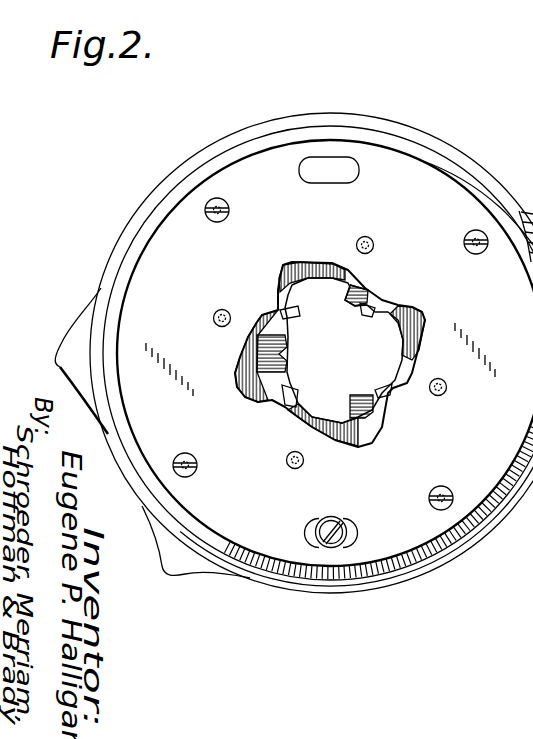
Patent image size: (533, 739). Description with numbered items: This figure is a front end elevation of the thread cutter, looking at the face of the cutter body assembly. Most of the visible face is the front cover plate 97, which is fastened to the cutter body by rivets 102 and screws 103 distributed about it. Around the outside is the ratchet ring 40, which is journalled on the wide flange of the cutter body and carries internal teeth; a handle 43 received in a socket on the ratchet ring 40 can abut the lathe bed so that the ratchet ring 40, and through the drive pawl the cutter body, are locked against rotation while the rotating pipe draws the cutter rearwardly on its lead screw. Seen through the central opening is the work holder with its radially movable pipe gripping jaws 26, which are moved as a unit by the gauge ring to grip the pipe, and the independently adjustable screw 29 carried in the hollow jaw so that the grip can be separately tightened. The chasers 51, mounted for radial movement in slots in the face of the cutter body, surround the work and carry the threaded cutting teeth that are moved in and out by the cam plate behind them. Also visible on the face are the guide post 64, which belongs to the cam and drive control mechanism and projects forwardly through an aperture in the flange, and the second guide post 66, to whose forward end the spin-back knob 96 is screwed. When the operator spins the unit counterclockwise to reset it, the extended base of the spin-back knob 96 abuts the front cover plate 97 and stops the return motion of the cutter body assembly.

The pipe gripping jaws 26 is at (358, 396).
The independently adjustable screw 29 is at (360, 293).
The ratchet ring 40 is at (466, 135).
The handle 43 is at (522, 213).
The chasers 51 is at (357, 313).
The guide post 64 is at (326, 178).
The second guide post 66 is at (357, 537).
The spin-back knob 96 is at (329, 549).
The front cover plate 97 is at (147, 271).
The rivets 102 is at (374, 246).
The screws 103 is at (228, 214).